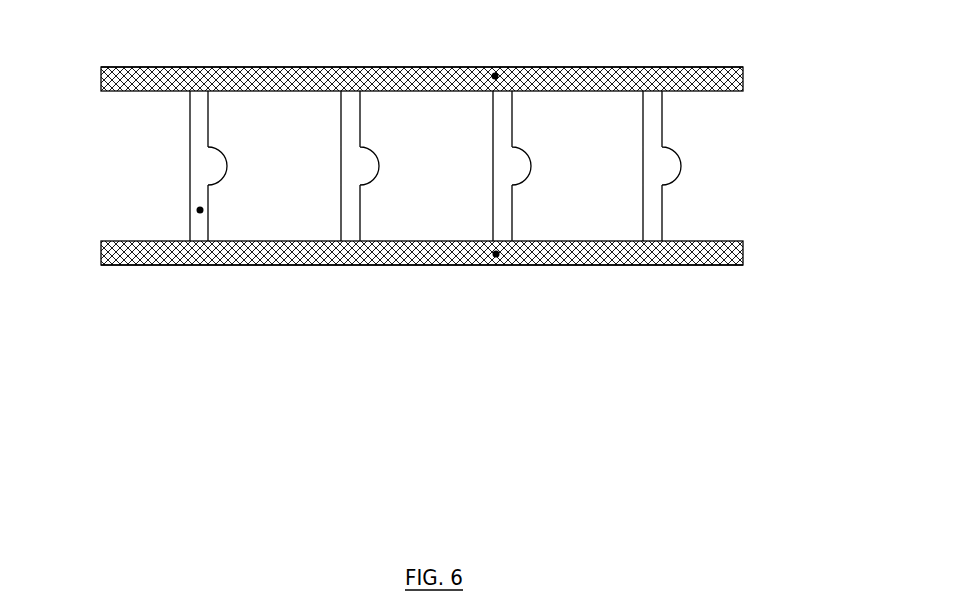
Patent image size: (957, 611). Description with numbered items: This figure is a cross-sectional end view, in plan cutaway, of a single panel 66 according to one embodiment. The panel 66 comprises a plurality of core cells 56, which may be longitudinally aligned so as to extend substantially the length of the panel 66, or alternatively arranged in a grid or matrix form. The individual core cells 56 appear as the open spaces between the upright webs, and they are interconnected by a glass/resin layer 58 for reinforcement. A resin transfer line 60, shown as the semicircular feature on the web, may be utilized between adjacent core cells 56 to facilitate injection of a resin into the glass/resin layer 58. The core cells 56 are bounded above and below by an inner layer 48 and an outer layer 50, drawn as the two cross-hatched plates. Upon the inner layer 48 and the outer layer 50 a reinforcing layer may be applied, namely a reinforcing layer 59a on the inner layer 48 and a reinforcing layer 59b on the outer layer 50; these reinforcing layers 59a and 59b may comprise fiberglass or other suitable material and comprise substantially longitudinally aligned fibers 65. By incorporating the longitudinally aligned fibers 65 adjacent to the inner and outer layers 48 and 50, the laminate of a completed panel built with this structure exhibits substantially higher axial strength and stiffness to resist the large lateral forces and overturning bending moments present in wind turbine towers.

The inner layer 48 is at (422, 282).
The outer layer 50 is at (422, 49).
The core cell 56 is at (316, 181).
The glass/resin layer 58 is at (239, 166).
The reinforcing layer 59a is at (471, 300).
The reinforcing layer 59b is at (472, 33).
The resin transfer line 60 is at (246, 149).
The longitudinally aligned fibers 65 is at (498, 177).
The panel 66 is at (399, 166).